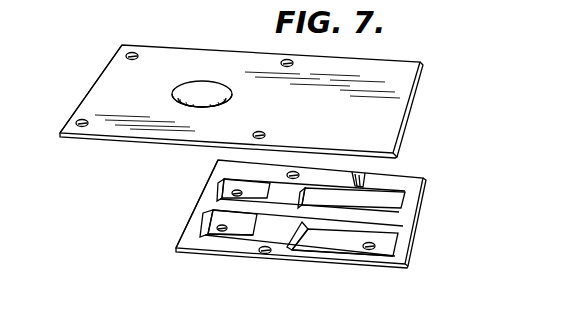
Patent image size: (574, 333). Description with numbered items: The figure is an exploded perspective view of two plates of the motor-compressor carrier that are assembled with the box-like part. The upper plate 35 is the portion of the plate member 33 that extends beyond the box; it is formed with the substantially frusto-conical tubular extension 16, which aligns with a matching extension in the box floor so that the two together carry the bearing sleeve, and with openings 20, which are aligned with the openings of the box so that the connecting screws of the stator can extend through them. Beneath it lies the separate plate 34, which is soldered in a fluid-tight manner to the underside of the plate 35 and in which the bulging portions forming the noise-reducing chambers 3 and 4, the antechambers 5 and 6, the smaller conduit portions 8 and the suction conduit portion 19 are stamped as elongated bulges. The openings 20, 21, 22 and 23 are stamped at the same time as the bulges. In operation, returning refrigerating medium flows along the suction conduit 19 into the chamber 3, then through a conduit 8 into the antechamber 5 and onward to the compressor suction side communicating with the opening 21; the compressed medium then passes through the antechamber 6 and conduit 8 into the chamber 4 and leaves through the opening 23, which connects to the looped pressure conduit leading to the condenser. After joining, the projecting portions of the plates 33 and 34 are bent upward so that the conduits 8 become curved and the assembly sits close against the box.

The noise-reducing chamber 3 is at (390, 209).
The noise-reducing chamber 4 is at (339, 247).
The antechamber 5 is at (228, 239).
The antechamber 6 is at (248, 193).
The conduit portion 8 is at (325, 196).
The frusto-conical tubular extension 16 is at (226, 95).
The suction conduit portion 19 is at (367, 177).
The openings 20 is at (298, 66).
The opening 21 is at (220, 192).
The opening 22 is at (213, 228).
The opening 23 is at (371, 250).
The plate member 33 is at (101, 94).
The chamber plate 34 is at (190, 243).
The plate 35 is at (404, 100).